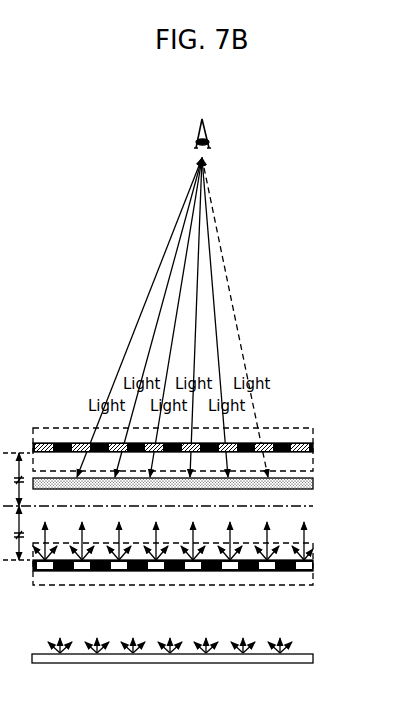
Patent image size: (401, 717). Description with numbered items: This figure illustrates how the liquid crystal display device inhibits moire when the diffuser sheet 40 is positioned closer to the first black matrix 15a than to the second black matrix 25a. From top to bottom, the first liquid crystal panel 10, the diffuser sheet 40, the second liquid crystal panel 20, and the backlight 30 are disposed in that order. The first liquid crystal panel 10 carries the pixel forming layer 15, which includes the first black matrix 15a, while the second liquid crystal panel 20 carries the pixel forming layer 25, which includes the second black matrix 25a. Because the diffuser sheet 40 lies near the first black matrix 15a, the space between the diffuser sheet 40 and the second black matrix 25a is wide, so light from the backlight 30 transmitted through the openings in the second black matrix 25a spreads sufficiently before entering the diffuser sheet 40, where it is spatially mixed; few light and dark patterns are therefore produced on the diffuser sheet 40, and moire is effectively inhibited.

The first liquid crystal panel 10 is at (290, 428).
The pixel forming layer 15 is at (312, 448).
The first black matrix 15a is at (275, 447).
The diffuser sheet 40 is at (300, 483).
The second liquid crystal panel 20 is at (310, 543).
The pixel forming layer 25 is at (312, 566).
The second black matrix 25a is at (300, 572).
The backlight 30 is at (308, 659).